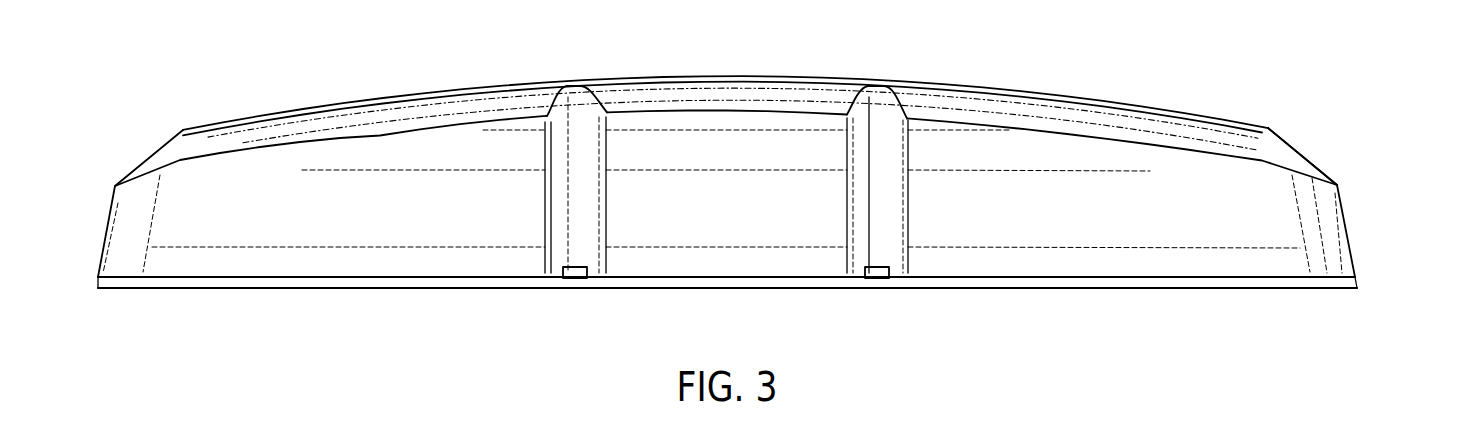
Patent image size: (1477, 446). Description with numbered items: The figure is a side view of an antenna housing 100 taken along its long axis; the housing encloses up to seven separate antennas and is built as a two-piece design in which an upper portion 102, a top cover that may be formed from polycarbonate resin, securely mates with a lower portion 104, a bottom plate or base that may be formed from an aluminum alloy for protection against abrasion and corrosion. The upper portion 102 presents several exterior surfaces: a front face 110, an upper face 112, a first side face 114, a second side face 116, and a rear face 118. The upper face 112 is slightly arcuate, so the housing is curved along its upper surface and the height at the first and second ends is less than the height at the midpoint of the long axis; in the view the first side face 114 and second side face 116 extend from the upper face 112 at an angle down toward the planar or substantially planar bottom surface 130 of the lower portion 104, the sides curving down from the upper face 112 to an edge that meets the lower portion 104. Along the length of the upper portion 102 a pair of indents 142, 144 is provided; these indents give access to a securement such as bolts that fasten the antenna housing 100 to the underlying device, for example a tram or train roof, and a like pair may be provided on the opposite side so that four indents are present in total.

The antenna housing 100 is at (1318, 125).
The upper portion 102 is at (1403, 122).
The lower portion 104 is at (1358, 280).
The front face 110 is at (1328, 245).
The upper face 112 is at (247, 138).
The first side face 114 is at (110, 220).
The second side face 116 is at (1343, 203).
The rear face 118 is at (1068, 95).
The bottom surface 130 is at (1023, 289).
The indent 142 is at (587, 247).
The indent 144 is at (887, 247).